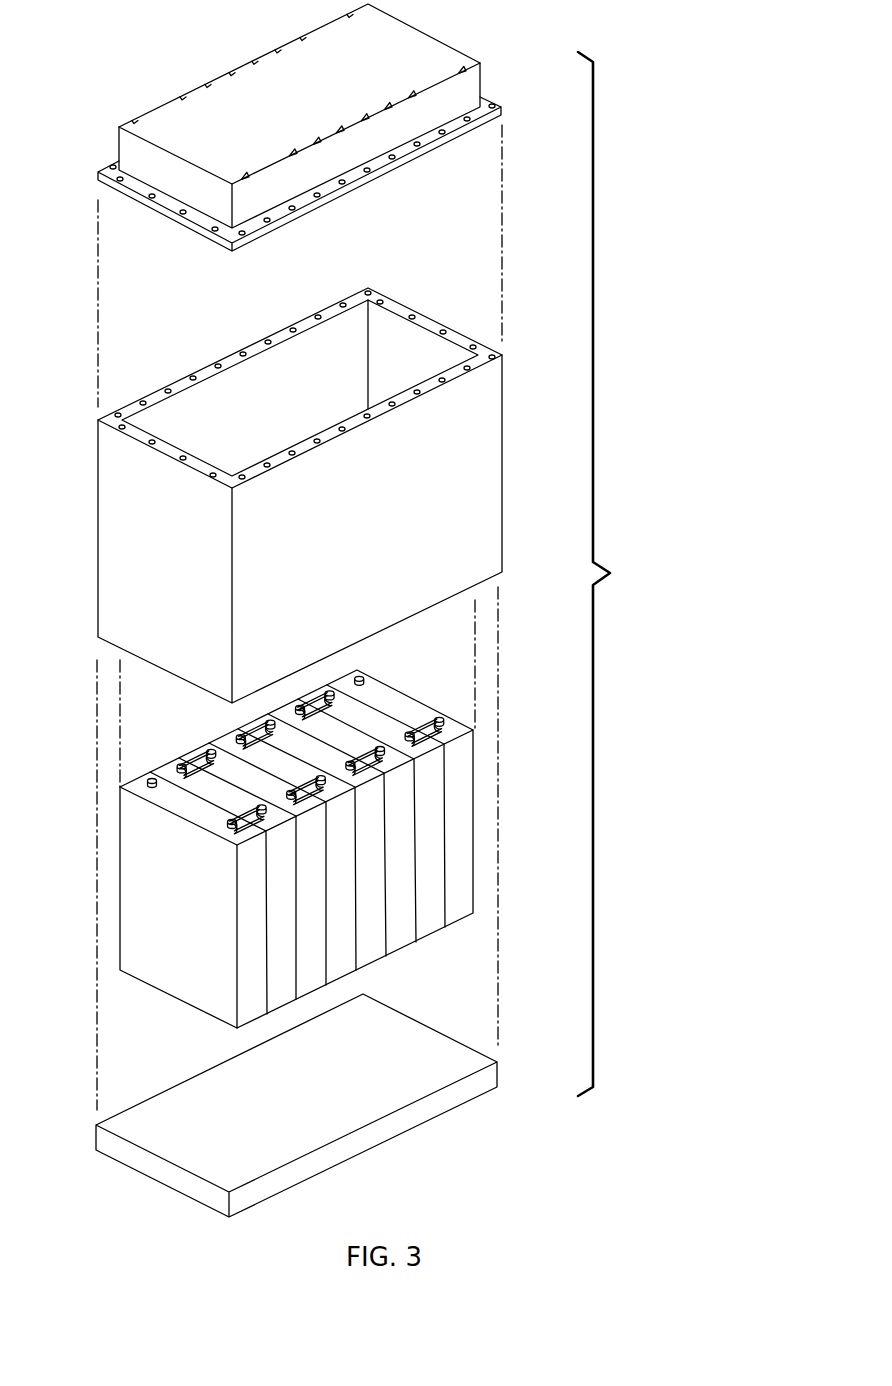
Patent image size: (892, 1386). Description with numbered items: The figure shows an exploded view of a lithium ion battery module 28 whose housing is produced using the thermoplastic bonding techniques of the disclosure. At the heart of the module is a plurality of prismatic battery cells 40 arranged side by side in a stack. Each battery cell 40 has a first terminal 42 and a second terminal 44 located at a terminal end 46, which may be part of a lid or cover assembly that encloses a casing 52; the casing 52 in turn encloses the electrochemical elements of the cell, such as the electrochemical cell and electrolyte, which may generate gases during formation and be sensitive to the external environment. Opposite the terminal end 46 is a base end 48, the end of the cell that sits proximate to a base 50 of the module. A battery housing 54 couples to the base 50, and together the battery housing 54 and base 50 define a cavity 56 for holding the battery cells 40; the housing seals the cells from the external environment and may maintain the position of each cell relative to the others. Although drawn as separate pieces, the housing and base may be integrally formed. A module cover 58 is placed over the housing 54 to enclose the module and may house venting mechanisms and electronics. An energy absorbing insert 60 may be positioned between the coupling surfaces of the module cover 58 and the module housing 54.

The lithium ion battery module 28 is at (613, 574).
The battery cell 40 is at (245, 865).
The first terminal 42 is at (228, 828).
The second terminal 44 is at (152, 778).
The terminal end 46 is at (194, 811).
The base end 48 is at (180, 1002).
The base 50 is at (157, 1127).
The casing 52 is at (156, 949).
The battery housing 54 is at (294, 480).
The cavity 56 is at (395, 354).
The module cover 58 is at (237, 90).
The energy absorbing insert 60 is at (480, 363).